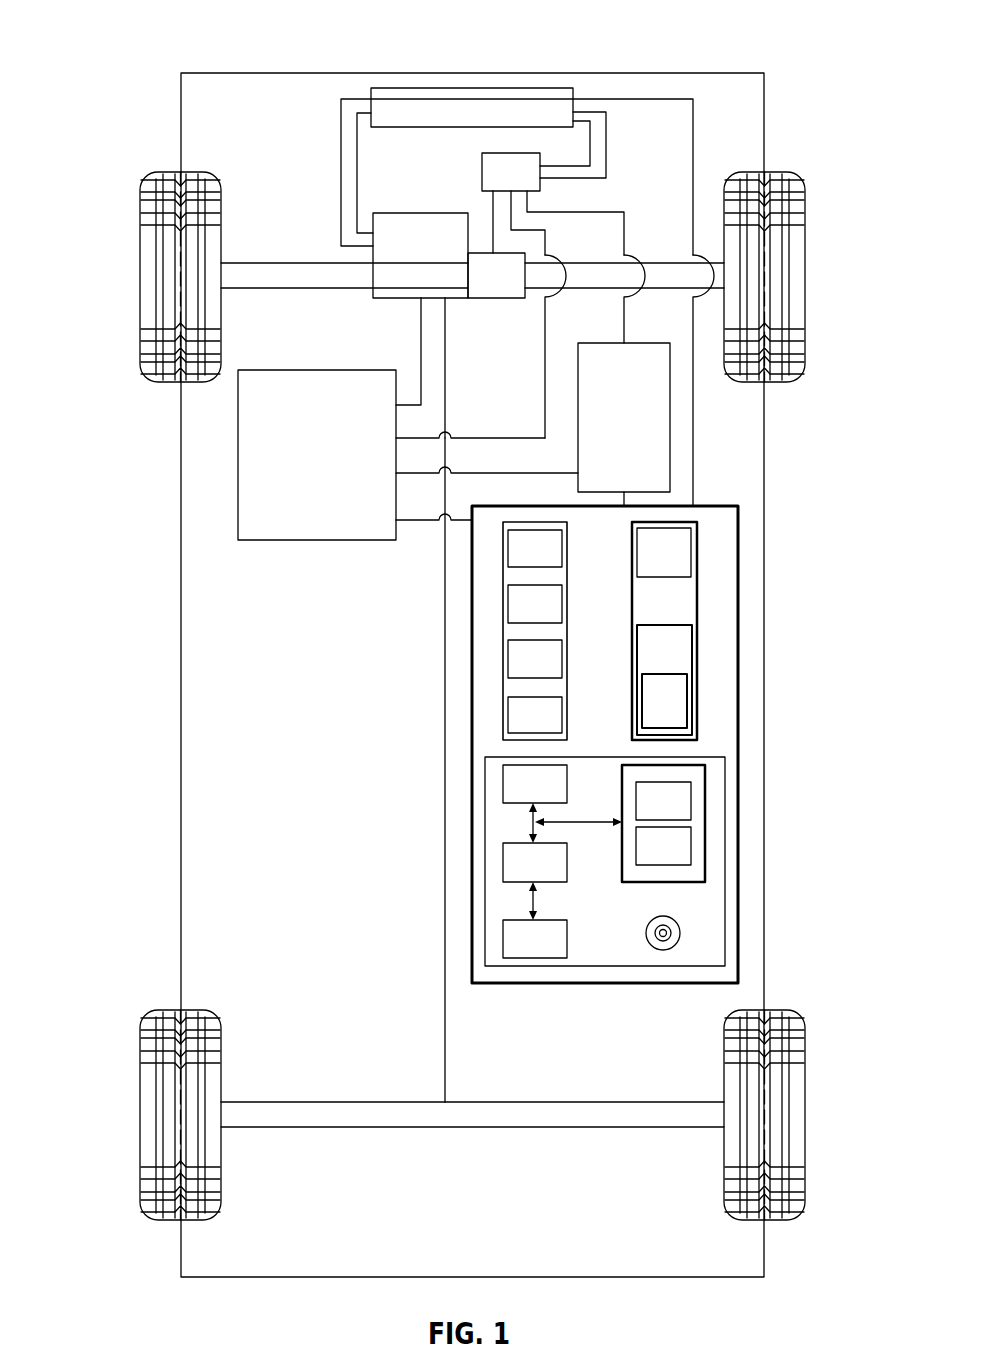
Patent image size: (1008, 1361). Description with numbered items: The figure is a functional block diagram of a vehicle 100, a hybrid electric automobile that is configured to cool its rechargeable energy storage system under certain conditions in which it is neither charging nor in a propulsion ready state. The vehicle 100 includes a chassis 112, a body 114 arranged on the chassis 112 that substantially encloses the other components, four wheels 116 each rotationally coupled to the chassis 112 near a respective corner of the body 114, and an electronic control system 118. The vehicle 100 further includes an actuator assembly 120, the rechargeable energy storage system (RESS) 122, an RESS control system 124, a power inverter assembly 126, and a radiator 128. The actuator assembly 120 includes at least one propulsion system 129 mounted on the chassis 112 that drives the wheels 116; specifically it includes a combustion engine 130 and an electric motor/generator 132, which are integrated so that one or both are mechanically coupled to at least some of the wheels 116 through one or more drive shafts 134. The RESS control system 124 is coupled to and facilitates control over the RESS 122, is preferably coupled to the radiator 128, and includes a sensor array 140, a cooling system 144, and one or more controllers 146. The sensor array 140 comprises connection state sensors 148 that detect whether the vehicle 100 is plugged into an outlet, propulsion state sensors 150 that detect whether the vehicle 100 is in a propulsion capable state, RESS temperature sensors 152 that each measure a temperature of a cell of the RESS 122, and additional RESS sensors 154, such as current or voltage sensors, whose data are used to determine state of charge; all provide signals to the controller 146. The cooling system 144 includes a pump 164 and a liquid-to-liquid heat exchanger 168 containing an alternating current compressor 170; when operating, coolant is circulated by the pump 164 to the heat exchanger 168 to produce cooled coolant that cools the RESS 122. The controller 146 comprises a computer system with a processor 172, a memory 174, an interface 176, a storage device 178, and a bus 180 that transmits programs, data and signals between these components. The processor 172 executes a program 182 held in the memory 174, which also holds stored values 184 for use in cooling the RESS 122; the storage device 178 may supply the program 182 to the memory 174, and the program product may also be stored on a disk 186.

The vehicle 100 is at (166, 40).
The chassis 112 is at (443, 1043).
The body 114 is at (180, 666).
The wheels 116 is at (141, 272).
The electronic control system 118 is at (318, 370).
The actuator assembly 120 is at (469, 337).
The rechargeable energy storage system (RESS) 122 is at (672, 422).
The RESS control system 124 is at (740, 522).
The power inverter assembly 126 is at (482, 172).
The radiator 128 is at (480, 88).
The propulsion system 129 is at (488, 250).
The combustion engine 130 is at (408, 240).
The electric motor/generator 132 is at (495, 285).
The drive shafts 134 is at (275, 263).
The sensor array 140 is at (512, 578).
The cooling system 144 is at (683, 605).
The controller 146 is at (605, 967).
The connection state sensors 148 is at (512, 547).
The propulsion state sensors 150 is at (512, 602).
The RESS temperature sensors 152 is at (512, 659).
The additional RESS sensors 154 is at (512, 715).
The pump 164 is at (685, 550).
The liquid-to-liquid heat exchanger 168 is at (680, 645).
The alternating current compressor 170 is at (680, 715).
The processor 172 is at (512, 783).
The memory 174 is at (697, 772).
The interface 176 is at (512, 862).
The storage device 178 is at (512, 939).
The bus 180 is at (533, 822).
The program 182 is at (684, 800).
The stored values 184 is at (684, 845).
The disk 186 is at (680, 933).